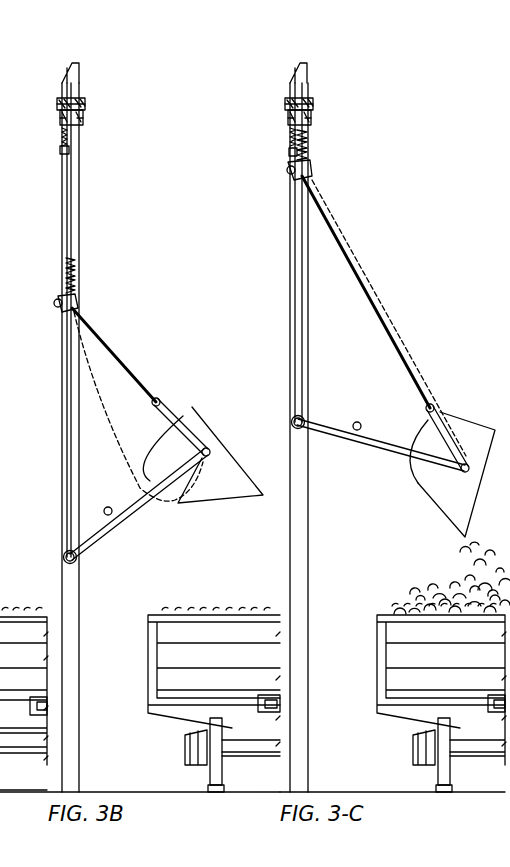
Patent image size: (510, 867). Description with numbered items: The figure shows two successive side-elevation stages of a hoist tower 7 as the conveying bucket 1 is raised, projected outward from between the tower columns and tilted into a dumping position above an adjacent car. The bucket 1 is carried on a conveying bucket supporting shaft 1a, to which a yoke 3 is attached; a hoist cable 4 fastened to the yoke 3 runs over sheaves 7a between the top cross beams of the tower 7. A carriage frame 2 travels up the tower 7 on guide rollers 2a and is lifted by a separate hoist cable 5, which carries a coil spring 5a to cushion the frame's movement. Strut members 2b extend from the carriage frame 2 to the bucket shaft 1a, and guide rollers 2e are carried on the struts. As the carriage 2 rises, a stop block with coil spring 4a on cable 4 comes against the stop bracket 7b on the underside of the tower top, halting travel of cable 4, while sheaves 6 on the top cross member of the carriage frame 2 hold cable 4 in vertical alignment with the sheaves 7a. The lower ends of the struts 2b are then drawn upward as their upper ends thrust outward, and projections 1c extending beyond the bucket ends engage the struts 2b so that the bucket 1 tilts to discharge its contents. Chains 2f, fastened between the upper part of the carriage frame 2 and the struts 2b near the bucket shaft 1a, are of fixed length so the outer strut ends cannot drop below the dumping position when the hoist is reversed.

In FIG. 3B, the conveying bucket 1 is at (220, 455).
In FIG. 3C, the conveying bucket 1 is at (456, 474).
In FIG. 3B, the conveying bucket supporting shaft 1a is at (210, 449).
In FIG. 3C, the conveying bucket supporting shaft 1a is at (470, 468).
In FIG. 3B, the projections for tilting bucket 1c is at (153, 480).
In FIG. 3C, the projections for tilting bucket 1c is at (405, 455).
In FIG. 3B, the carriage frame 2 is at (62, 380).
In FIG. 3C, the carriage frame 2 is at (295, 265).
In FIG. 3B, the guide rollers of frame 2a is at (76, 560).
In FIG. 3C, the guide rollers of frame 2a is at (293, 418).
In FIG. 3B, the strut members 2b is at (133, 522).
In FIG. 3C, the strut members 2b is at (380, 447).
In FIG. 3B, the guide rollers of brace 2e is at (110, 506).
In FIG. 3C, the guide rollers of brace 2e is at (366, 407).
In FIG. 3B, the chain stops 2f is at (106, 410).
In FIG. 3C, the chain stops 2f is at (392, 311).
In FIG. 3B, the yoke 3 is at (161, 402).
In FIG. 3C, the yoke 3 is at (435, 432).
In FIG. 3B, the hoist cable 4 is at (117, 348).
In FIG. 3C, the hoist cable 4 is at (388, 338).
In FIG. 3B, the stop block with coil spring 4a is at (59, 152).
In FIG. 3C, the stop block with coil spring 4a is at (289, 153).
In FIG. 3B, the hoist cable attached to carriage frame 5 is at (80, 218).
In FIG. 3C, the hoist cable attached to carriage frame 5 is at (310, 132).
In FIG. 3B, the coil spring on cable 5a is at (66, 270).
In FIG. 3C, the coil spring on cable 5a is at (310, 148).
In FIG. 3B, the sheaves 6 is at (56, 300).
In FIG. 3C, the sheaves 6 is at (290, 172).
In FIG. 3B, the hoist tower 7 is at (60, 103).
In FIG. 3C, the hoist tower 7 is at (288, 103).
In FIG. 3B, the sheaves for hoist cables 7a is at (76, 64).
In FIG. 3C, the sheaves for hoist cables 7a is at (304, 64).
In FIG. 3B, the stop bracket 7b is at (59, 128).
In FIG. 3C, the stop bracket 7b is at (288, 128).